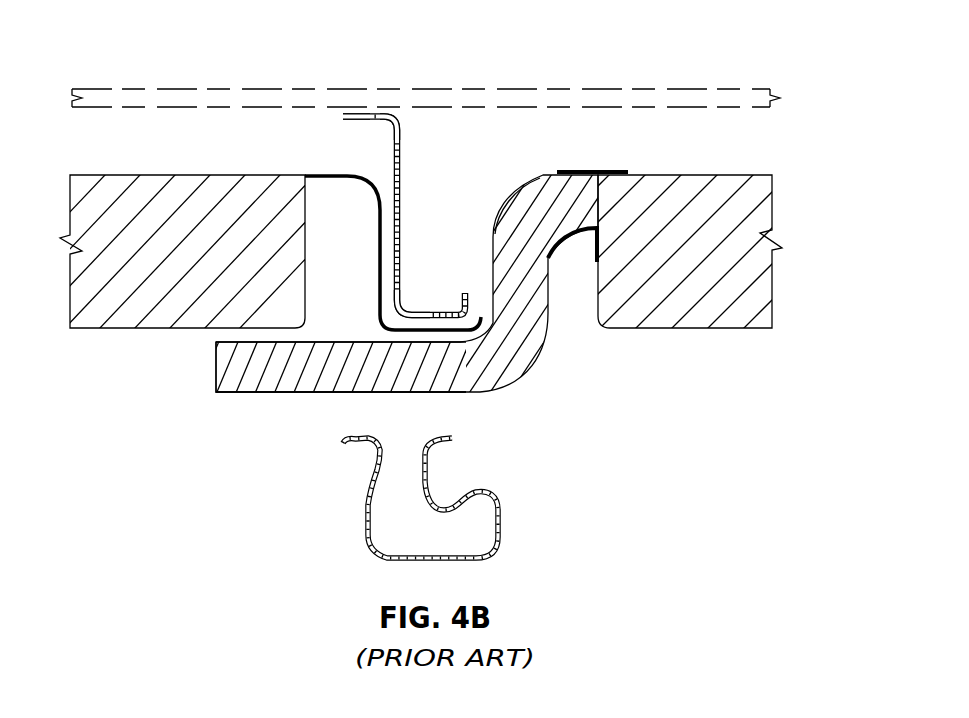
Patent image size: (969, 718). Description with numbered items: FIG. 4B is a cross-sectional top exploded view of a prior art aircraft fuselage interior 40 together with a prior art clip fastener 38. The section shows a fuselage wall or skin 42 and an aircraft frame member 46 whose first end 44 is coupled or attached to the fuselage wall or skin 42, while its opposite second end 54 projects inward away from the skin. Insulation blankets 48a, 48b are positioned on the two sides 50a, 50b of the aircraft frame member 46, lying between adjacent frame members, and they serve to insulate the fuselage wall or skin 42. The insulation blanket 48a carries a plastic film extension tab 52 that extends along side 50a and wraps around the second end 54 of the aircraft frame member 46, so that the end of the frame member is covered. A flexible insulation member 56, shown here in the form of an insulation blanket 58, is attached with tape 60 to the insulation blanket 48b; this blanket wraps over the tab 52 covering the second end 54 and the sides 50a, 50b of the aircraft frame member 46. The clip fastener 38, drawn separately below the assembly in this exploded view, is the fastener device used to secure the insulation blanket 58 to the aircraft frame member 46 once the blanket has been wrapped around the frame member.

The clip fastener 38 is at (497, 495).
The aircraft fuselage interior 40 is at (786, 171).
The fuselage wall or skin 42 is at (480, 84).
The first end 44 is at (362, 112).
The aircraft frame member 46 is at (402, 174).
The insulation blanket 48a is at (92, 317).
The insulation blanket 48b is at (728, 315).
The side 50a is at (393, 145).
The side 50b is at (403, 221).
The plastic film extension tab 52 is at (363, 186).
The second end 54 is at (453, 327).
The flexible insulation member 56 is at (243, 395).
The insulation blanket 58 is at (282, 382).
The tape 60 is at (592, 170).